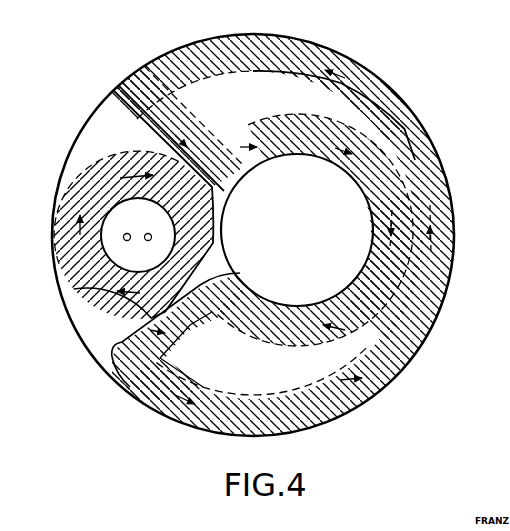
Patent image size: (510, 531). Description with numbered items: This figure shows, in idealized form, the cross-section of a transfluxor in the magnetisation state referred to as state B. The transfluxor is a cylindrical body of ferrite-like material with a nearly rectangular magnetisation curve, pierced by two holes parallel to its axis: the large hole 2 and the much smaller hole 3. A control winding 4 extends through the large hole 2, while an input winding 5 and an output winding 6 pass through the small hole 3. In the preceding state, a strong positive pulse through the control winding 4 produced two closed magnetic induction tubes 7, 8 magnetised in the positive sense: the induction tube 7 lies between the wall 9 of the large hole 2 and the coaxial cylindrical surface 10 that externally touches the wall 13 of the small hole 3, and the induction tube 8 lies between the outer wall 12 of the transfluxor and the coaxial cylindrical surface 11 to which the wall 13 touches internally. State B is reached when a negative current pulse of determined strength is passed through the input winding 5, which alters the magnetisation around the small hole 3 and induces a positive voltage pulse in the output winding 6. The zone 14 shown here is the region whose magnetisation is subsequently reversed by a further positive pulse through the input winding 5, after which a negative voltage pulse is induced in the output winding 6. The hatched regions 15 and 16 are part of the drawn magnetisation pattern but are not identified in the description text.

The large hole 2 is at (356, 216).
The small hole 3 is at (100, 240).
The control winding 4 is at (300, 233).
The input winding 5 is at (148, 241).
The output winding 6 is at (127, 241).
The magnetic induction tube 7 is at (365, 295).
The magnetic induction tube 8 is at (403, 117).
The wall of the large hole 9 is at (283, 154).
The cylindrical surface 10 is at (283, 117).
The cylindrical surface 11 is at (250, 76).
The outer wall 12 is at (455, 258).
The wall of the small hole 13 is at (136, 192).
The zone 14 is at (78, 292).
The connecting channel 15 is at (163, 117).
The lower chamber wall 16 is at (112, 312).
The state B is at (262, 15).